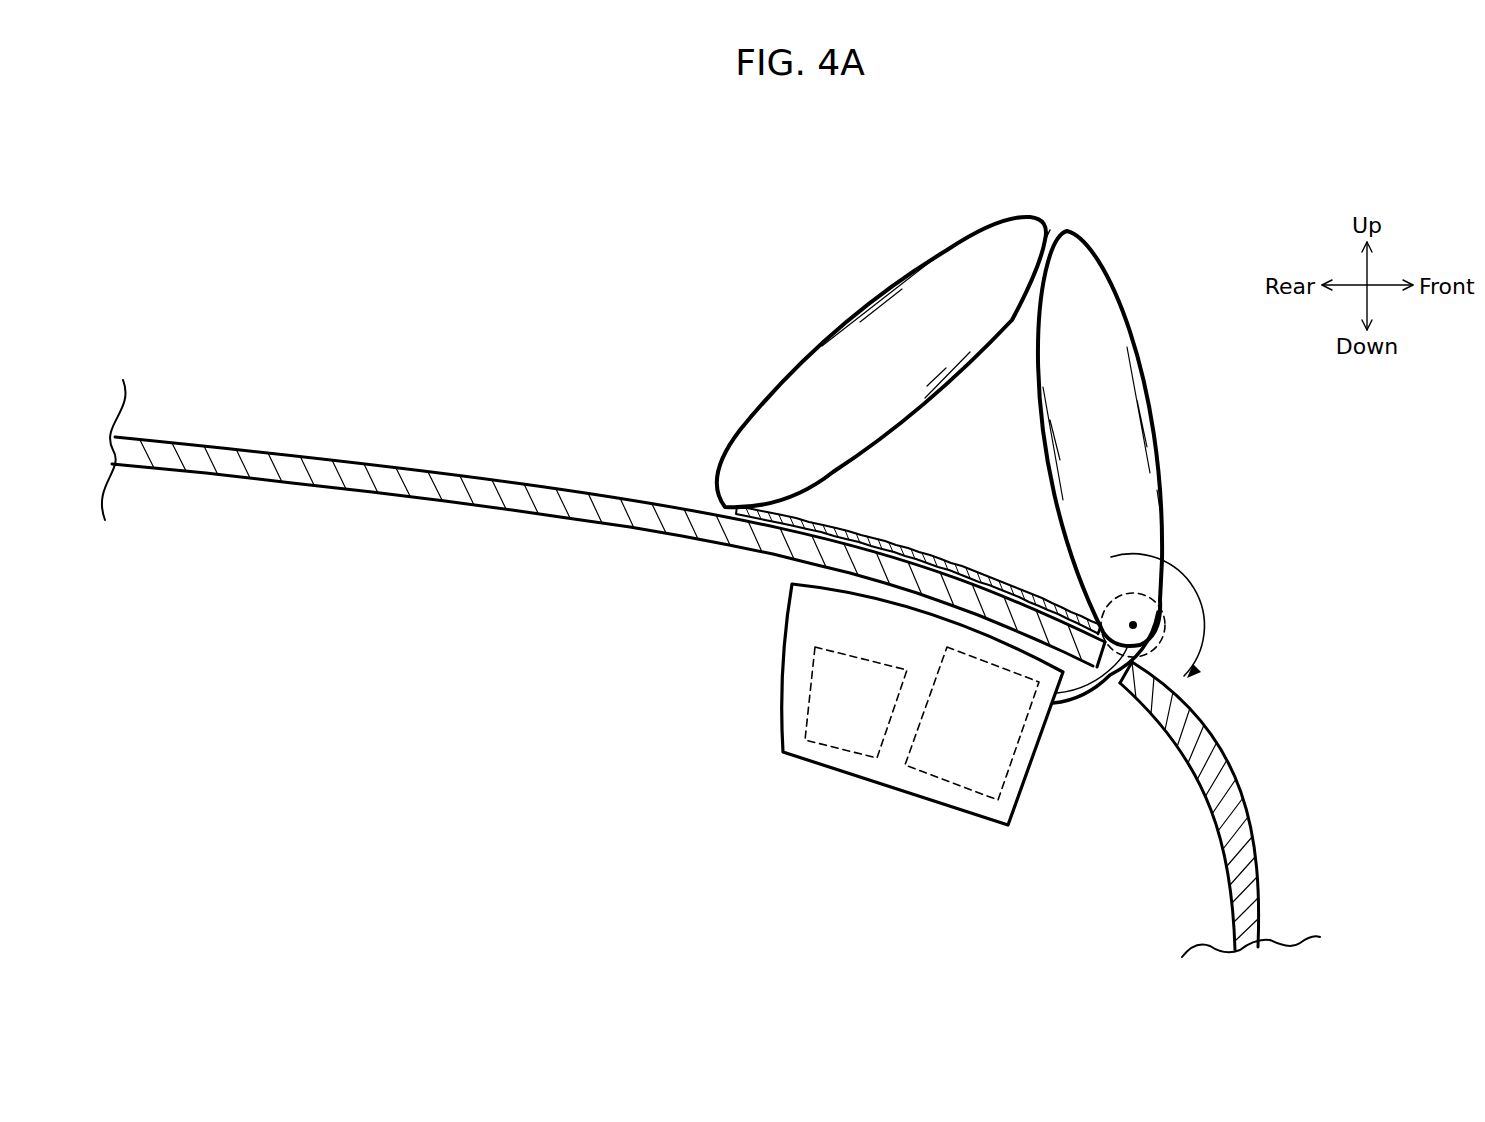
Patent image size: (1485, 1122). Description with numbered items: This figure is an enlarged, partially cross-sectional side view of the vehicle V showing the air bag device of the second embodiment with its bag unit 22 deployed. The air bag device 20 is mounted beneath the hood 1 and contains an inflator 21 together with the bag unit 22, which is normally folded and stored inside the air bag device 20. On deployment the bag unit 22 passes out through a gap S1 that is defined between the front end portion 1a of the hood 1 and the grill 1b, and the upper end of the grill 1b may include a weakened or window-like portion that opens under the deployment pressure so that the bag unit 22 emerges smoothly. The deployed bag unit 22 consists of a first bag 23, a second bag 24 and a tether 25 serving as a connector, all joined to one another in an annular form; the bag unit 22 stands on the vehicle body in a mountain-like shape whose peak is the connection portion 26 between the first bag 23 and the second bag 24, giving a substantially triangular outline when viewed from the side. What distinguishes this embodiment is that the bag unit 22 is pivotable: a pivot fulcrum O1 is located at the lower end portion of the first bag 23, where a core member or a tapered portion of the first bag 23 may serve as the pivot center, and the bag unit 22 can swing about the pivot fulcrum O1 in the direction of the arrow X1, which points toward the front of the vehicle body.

The vehicle V is at (584, 243).
The hood 1 is at (466, 476).
The front end portion of the hood 1a is at (1100, 622).
The grill 1b is at (1235, 792).
The air bag device 20 is at (885, 785).
The inflator 21 is at (828, 747).
The bag unit 22 is at (948, 785).
The first bag 23 is at (1168, 452).
The second bag 24 is at (802, 363).
The tether 25 is at (945, 556).
The connection portion 26 is at (1055, 222).
The pivot fulcrum O1 is at (1137, 624).
The arrow indicating pivot direction X1 is at (1193, 577).
The gap S1 is at (1105, 703).